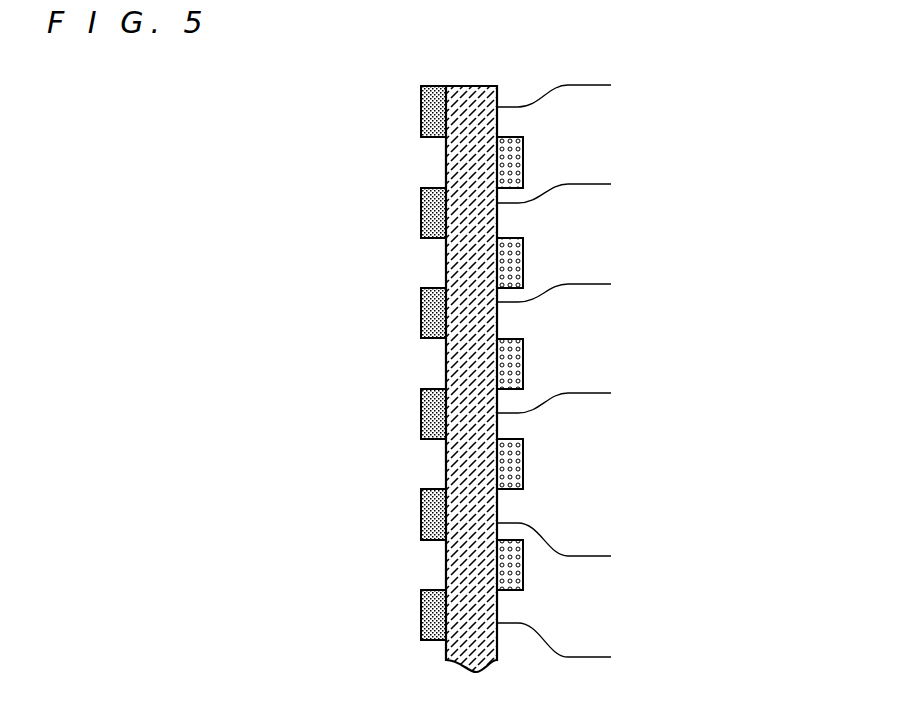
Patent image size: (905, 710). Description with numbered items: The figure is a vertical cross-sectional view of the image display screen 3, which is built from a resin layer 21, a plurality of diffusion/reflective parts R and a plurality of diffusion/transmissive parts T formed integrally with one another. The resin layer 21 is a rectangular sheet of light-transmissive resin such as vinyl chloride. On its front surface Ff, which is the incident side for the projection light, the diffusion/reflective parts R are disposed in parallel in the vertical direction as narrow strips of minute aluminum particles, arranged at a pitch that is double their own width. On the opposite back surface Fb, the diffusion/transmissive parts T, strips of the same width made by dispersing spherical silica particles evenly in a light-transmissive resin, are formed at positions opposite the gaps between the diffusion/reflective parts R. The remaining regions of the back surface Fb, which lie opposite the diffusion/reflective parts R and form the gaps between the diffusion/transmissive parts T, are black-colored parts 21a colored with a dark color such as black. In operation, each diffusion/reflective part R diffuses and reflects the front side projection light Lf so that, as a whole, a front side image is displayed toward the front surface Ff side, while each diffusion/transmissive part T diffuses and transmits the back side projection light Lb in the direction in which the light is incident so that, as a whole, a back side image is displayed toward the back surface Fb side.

The image display screen 3 is at (302, 89).
The resin layer 21 is at (484, 670).
The black-colored parts 21a is at (577, 372).
The diffusion/reflective parts R is at (421, 106).
The diffusion/transmissive parts T is at (511, 137).
The front surface Ff is at (441, 260).
The back surface Fb is at (508, 322).
The front side projection light Lf is at (420, 402).
The back side projection light Lb is at (572, 427).